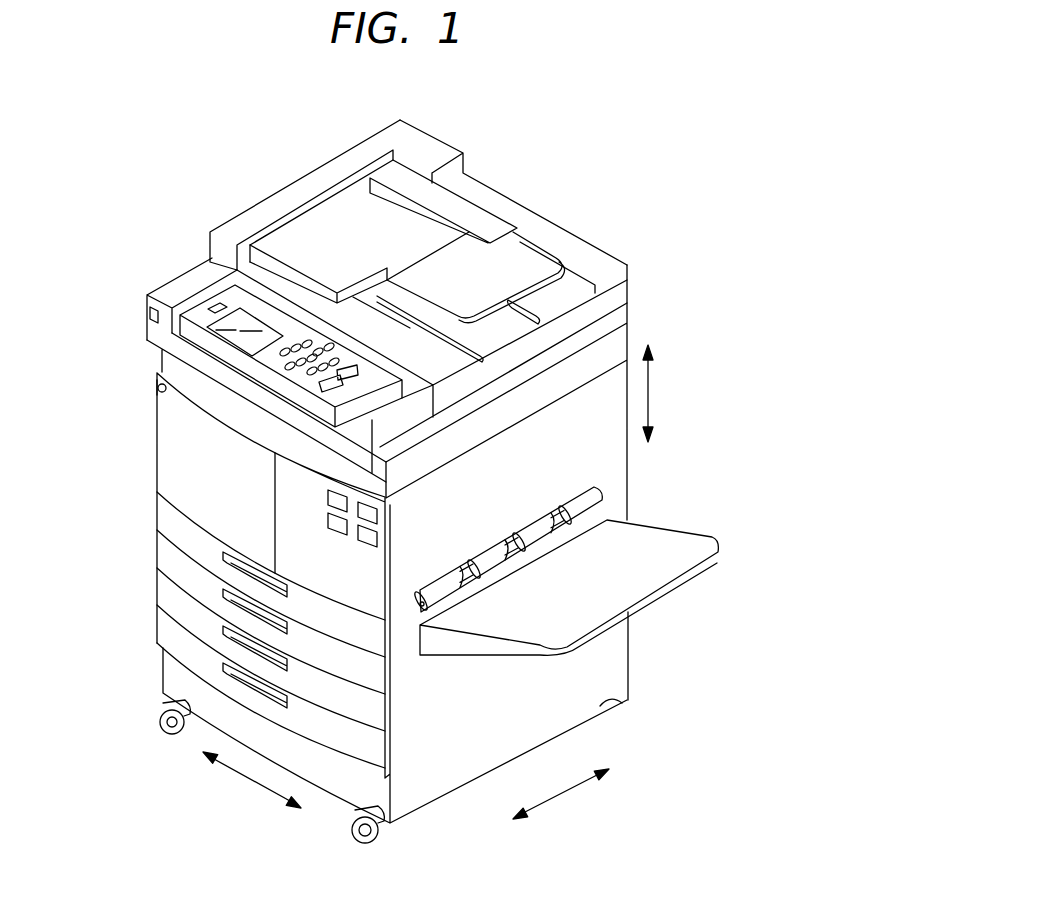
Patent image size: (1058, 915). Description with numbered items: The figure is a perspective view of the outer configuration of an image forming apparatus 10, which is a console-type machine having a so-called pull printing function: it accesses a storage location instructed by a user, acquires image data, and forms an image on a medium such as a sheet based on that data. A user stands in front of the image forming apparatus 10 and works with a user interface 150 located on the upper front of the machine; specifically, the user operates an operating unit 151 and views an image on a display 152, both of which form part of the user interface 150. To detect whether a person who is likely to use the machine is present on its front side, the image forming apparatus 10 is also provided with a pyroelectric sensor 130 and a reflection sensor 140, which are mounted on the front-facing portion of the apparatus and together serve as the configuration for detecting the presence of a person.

The image forming apparatus 10 is at (590, 193).
The pyroelectric sensor 130 is at (158, 388).
The reflection sensor 140 is at (148, 313).
The user interface 150 is at (274, 264).
The operating unit 151 is at (295, 345).
The display 152 is at (229, 314).